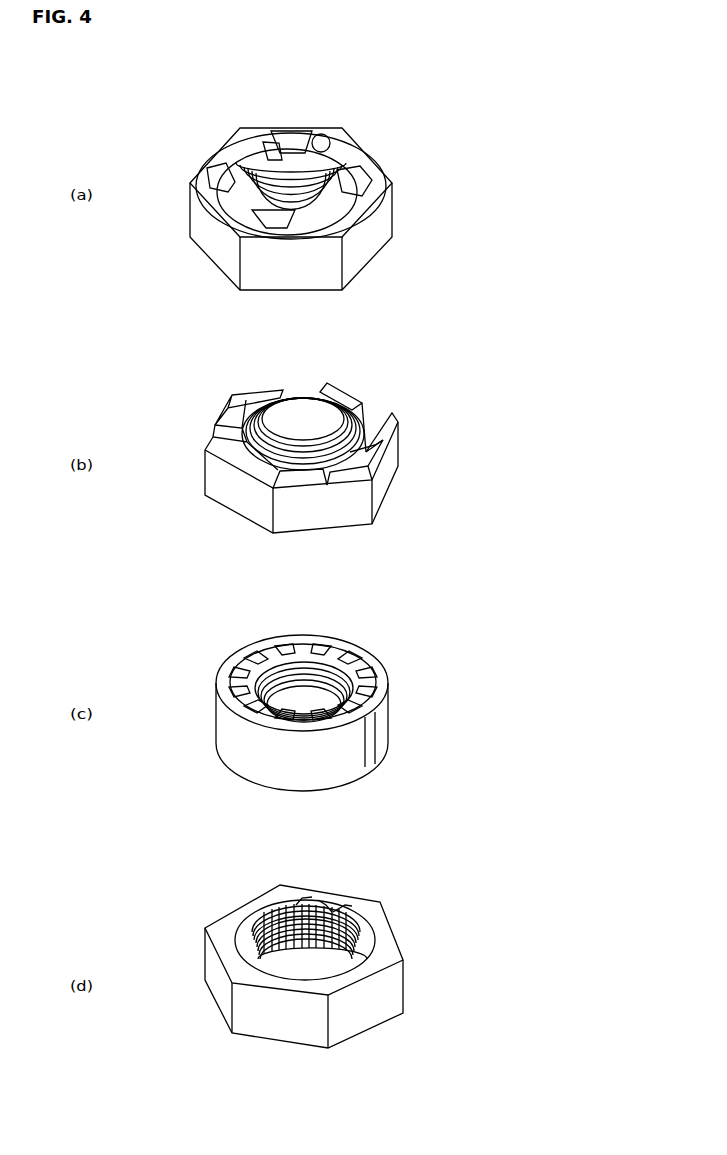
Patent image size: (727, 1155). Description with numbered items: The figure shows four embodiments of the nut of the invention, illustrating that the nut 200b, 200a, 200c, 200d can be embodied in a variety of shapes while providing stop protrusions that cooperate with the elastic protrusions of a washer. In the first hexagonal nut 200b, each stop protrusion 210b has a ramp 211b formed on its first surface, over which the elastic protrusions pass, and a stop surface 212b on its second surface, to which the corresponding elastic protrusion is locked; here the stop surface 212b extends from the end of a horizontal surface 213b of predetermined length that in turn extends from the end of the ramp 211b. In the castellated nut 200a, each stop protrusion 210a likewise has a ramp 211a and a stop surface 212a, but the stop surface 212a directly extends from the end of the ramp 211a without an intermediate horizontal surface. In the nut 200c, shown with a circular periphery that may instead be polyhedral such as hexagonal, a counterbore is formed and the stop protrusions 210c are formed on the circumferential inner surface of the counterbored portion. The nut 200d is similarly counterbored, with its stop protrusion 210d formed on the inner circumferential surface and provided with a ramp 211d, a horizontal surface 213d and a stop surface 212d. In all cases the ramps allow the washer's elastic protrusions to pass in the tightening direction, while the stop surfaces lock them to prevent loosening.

The nut 200b is at (414, 164).
The stop protrusion 210b is at (296, 143).
The ramp 211b is at (268, 140).
The stop surface 212b is at (354, 117).
The horizontal surface 213b is at (300, 131).
The nut 200a is at (416, 407).
The stop protrusion 210a is at (379, 450).
The ramp 211a is at (380, 437).
The stop surface 212a is at (383, 467).
The nut 200c is at (424, 672).
The stop protrusion 210c is at (357, 650).
The nut 200d is at (433, 962).
The stop protrusion 210d is at (385, 906).
The ramp 211d is at (337, 900).
The stop surface 212d is at (347, 902).
The horizontal surface 213d is at (333, 903).